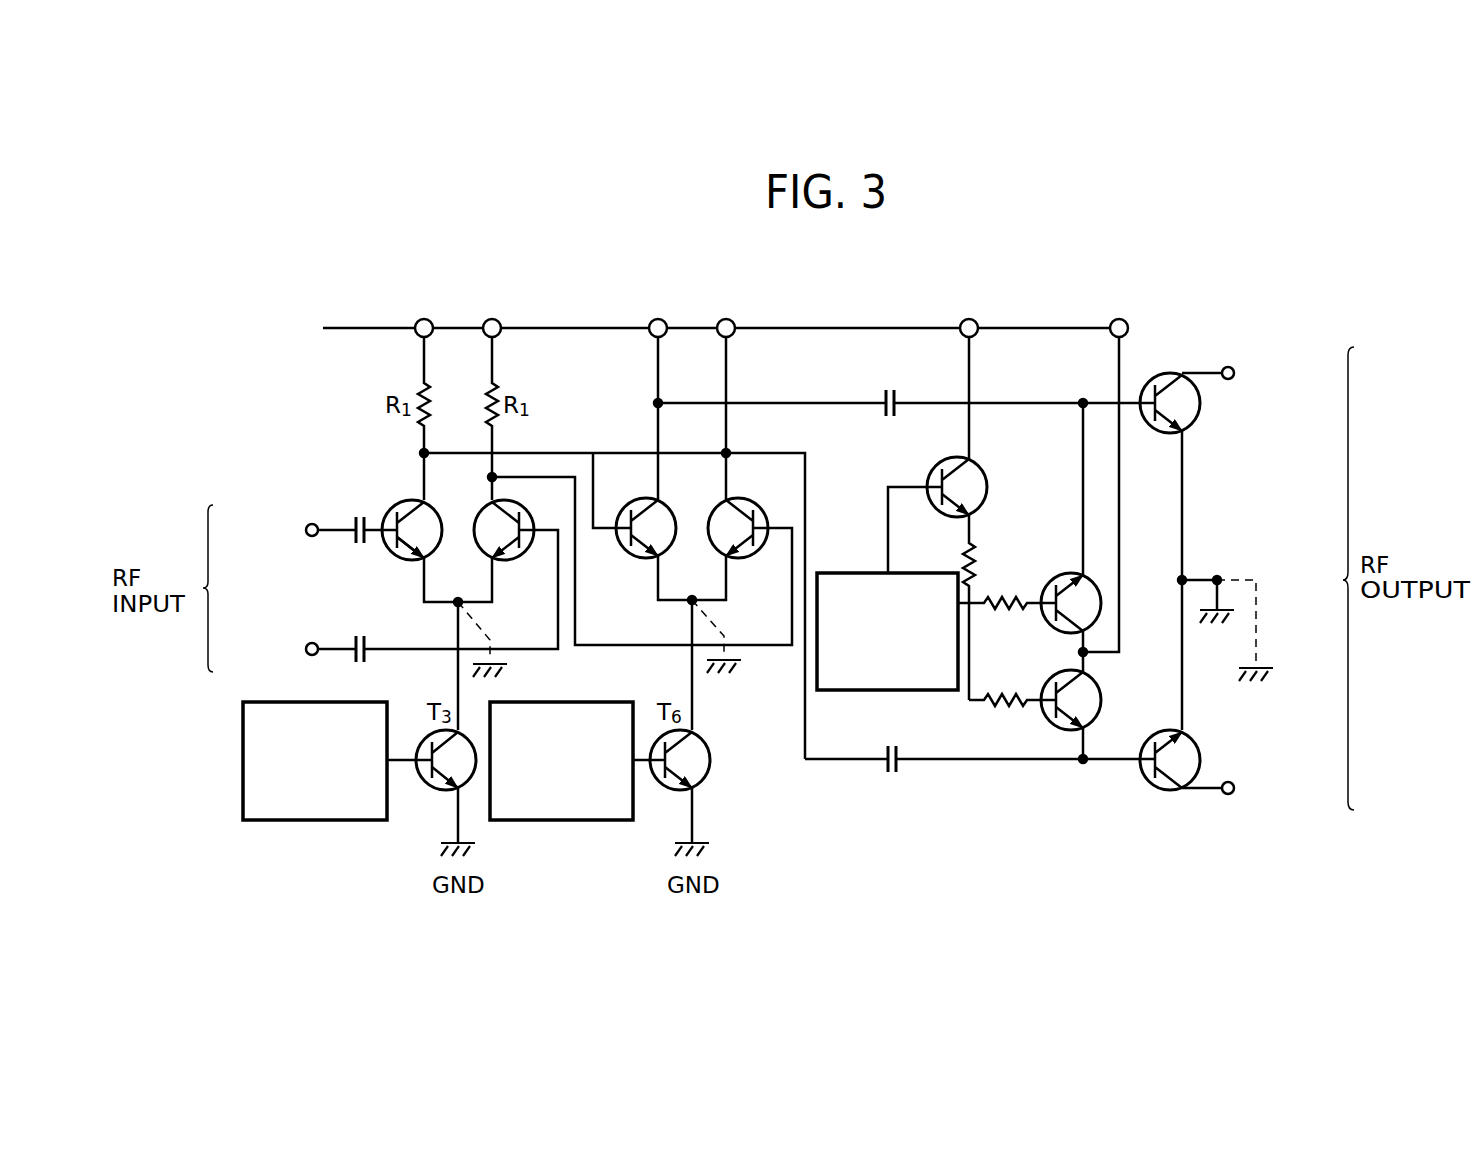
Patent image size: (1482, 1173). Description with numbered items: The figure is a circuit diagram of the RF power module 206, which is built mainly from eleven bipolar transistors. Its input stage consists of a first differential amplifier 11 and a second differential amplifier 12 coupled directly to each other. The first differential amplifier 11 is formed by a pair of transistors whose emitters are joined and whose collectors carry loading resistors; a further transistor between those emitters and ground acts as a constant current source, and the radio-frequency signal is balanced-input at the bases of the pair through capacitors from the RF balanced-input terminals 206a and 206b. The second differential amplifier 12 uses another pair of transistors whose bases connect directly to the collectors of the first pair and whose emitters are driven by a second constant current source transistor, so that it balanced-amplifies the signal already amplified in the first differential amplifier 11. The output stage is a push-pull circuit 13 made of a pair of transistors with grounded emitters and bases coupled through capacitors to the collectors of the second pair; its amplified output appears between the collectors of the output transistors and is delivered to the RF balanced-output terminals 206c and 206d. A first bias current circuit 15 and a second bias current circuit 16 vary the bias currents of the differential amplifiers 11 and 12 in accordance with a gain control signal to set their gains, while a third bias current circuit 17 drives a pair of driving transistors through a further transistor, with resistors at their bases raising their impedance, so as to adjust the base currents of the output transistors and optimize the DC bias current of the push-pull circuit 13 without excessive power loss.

The RF power module 206 is at (553, 303).
The RF balanced-input terminal (RFin(+)) 206a is at (314, 522).
The RF balanced-input terminal (RFin(−)) 206b is at (312, 656).
The RF balanced-output terminal (RFout(+)) 206c is at (1228, 366).
The RF balanced-output terminal (RFout(−)) 206d is at (1228, 795).
The first differential amplifier 11 is at (448, 571).
The second differential amplifier 12 is at (686, 579).
The push-pull circuit 13 is at (1228, 513).
The first bias current circuit 15 is at (293, 822).
The second bias current circuit 16 is at (555, 822).
The third bias current circuit 17 is at (855, 572).